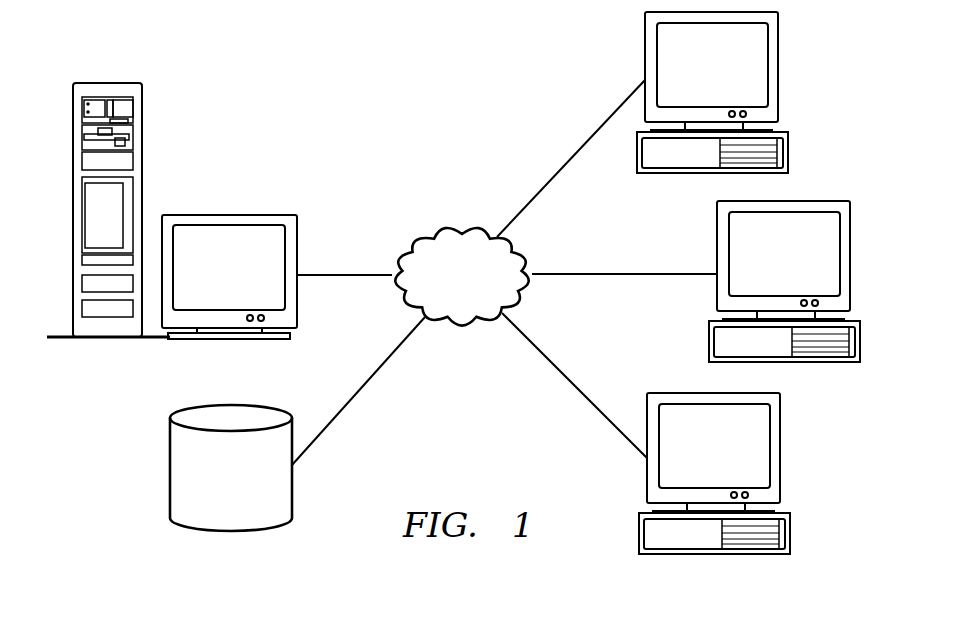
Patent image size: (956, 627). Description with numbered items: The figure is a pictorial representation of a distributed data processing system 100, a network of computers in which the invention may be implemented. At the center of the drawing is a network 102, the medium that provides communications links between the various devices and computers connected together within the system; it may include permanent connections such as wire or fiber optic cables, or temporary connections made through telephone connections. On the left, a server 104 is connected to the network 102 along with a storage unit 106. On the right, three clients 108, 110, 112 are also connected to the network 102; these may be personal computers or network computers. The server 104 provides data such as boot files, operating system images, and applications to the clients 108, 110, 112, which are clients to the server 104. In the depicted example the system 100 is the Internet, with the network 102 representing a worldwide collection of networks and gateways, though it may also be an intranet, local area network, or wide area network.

The distributed data processing system 100 is at (254, 59).
The network 102 is at (480, 302).
The server 104 is at (212, 278).
The storage unit 106 is at (250, 506).
The client 108 is at (692, 77).
The client 110 is at (805, 267).
The client 112 is at (735, 458).